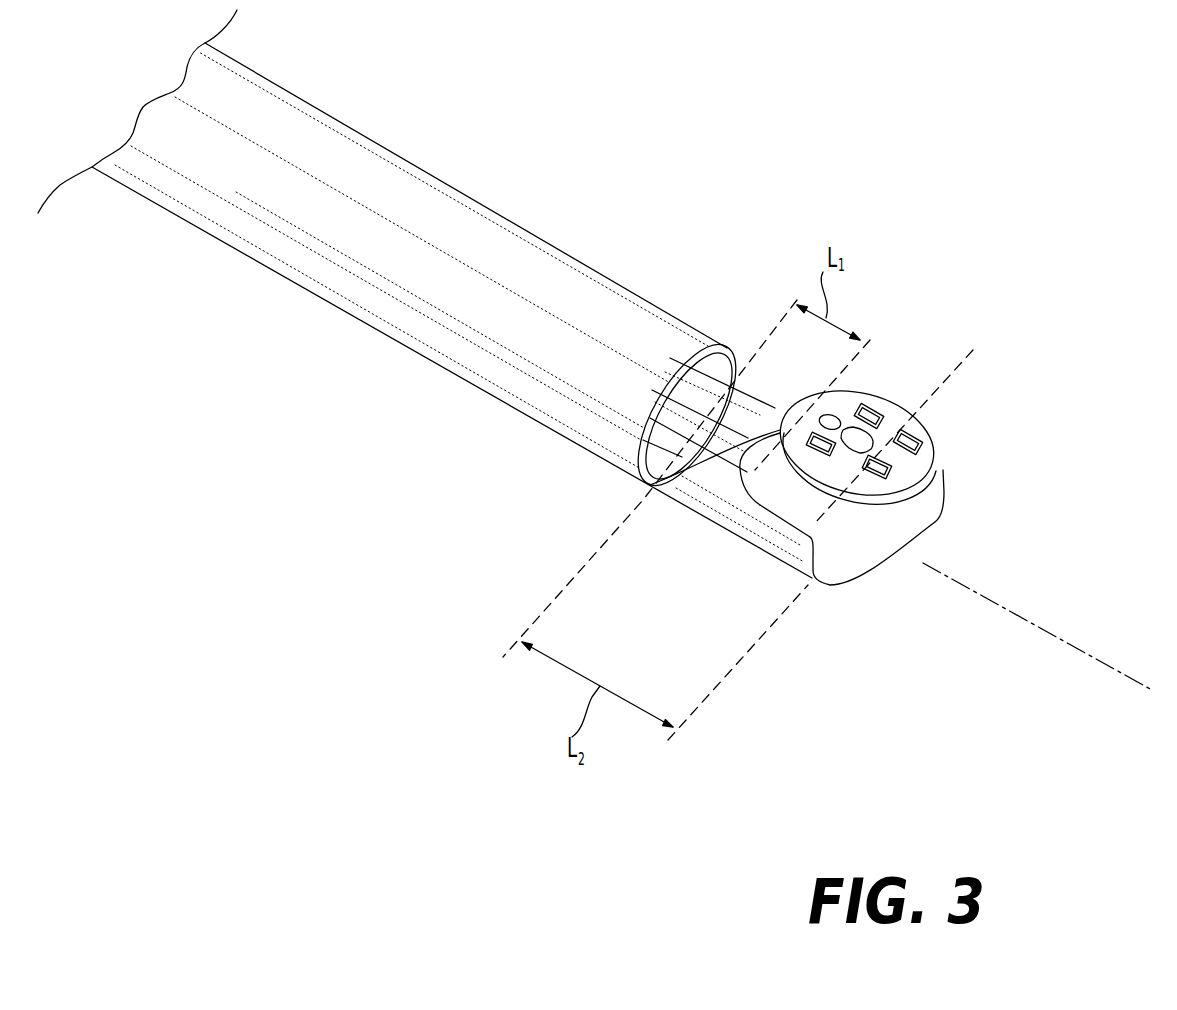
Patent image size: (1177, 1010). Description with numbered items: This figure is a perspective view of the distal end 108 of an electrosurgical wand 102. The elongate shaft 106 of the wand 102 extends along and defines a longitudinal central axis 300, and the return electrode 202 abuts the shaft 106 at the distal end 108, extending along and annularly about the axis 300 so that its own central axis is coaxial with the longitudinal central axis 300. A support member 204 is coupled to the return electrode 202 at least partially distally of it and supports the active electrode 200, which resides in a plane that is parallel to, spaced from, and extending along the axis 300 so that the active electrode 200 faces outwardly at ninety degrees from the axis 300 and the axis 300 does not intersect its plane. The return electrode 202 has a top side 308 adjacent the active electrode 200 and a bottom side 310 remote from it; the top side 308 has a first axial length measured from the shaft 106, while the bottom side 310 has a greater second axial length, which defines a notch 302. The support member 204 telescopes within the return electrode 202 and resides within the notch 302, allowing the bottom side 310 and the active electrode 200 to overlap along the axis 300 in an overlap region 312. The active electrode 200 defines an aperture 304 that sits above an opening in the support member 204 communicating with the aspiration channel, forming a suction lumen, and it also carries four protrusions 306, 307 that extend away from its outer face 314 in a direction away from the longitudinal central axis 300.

The wand 102 is at (429, 553).
The elongate shaft 106 is at (560, 240).
The distal end 108 is at (945, 526).
The active electrode 200 is at (942, 462).
The return electrode 202 is at (705, 498).
The support member 204 is at (830, 547).
The longitudinal central axis 300 is at (1072, 645).
The notch 302 is at (785, 507).
The aperture 304 is at (935, 478).
The protrusion 306 is at (876, 408).
The protrusion 307 is at (922, 441).
The top side 308 is at (736, 378).
The bottom side 310 is at (783, 550).
The overlap region 312 is at (974, 350).
The outer face 314 is at (902, 477).